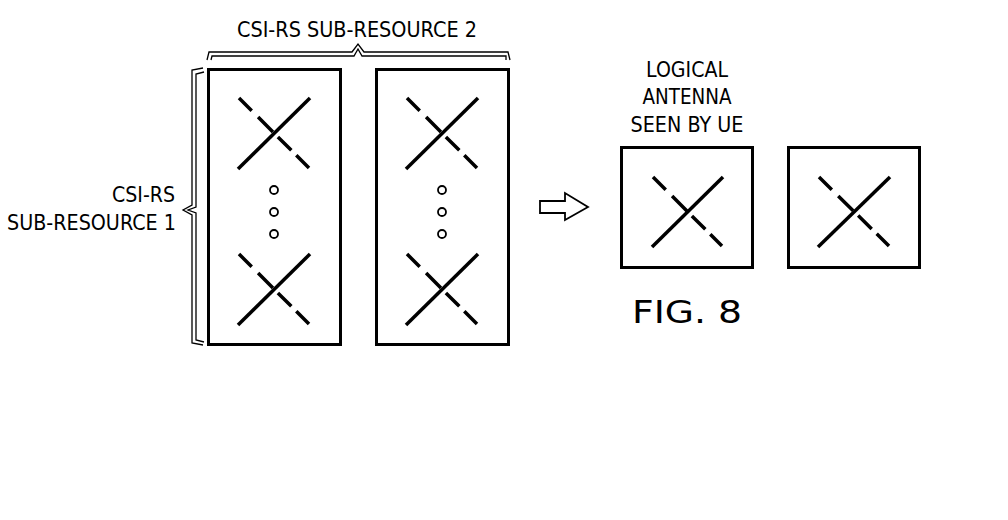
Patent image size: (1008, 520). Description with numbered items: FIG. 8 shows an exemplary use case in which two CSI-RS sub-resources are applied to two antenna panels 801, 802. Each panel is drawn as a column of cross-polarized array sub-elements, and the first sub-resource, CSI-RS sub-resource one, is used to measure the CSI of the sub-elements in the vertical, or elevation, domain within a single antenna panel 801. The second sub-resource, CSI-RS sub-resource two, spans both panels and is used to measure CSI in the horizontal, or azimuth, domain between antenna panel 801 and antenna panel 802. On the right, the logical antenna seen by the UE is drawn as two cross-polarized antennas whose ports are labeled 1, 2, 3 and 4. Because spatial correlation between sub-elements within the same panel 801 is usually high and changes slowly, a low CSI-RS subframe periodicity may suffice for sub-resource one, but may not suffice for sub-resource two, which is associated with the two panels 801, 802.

The antenna panel 801 is at (266, 356).
The antenna panel 802 is at (433, 356).
The logical antenna port 1 is at (678, 199).
The logical antenna port 2 is at (696, 200).
The logical antenna port 3 is at (844, 199).
The logical antenna port 4 is at (862, 200).